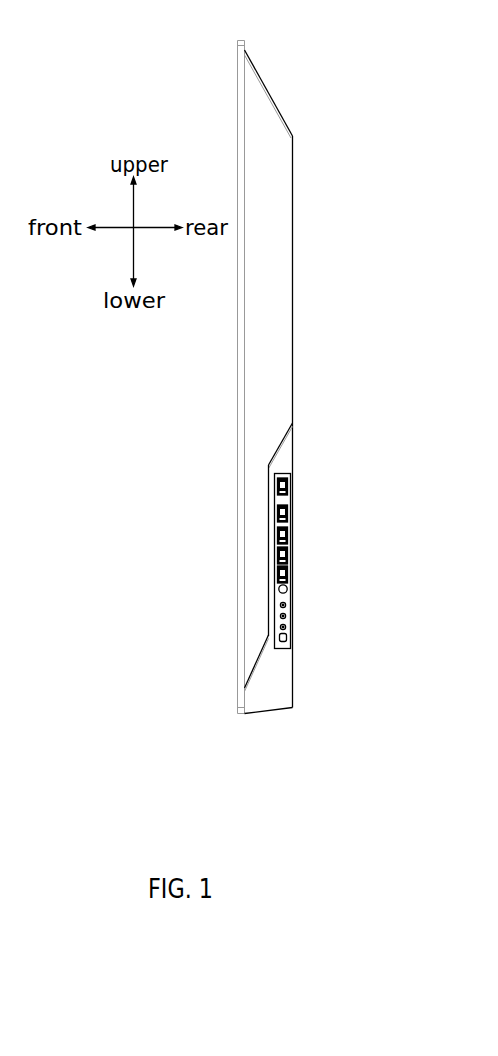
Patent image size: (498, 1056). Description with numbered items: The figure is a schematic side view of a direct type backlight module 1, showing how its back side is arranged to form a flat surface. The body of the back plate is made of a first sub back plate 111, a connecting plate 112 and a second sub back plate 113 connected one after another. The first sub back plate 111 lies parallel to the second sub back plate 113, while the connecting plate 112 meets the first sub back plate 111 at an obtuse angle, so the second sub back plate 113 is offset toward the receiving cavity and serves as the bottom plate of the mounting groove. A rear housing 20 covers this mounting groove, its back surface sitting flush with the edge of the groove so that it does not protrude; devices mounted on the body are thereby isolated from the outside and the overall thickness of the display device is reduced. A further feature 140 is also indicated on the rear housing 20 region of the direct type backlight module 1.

The direct type backlight module 1 is at (270, 377).
The first sub back plate 111 is at (293, 341).
The connecting plate 112 is at (283, 446).
The second sub back plate 113 is at (268, 570).
The rear housing 20 is at (292, 538).
The indicator buttons 140 is at (275, 612).